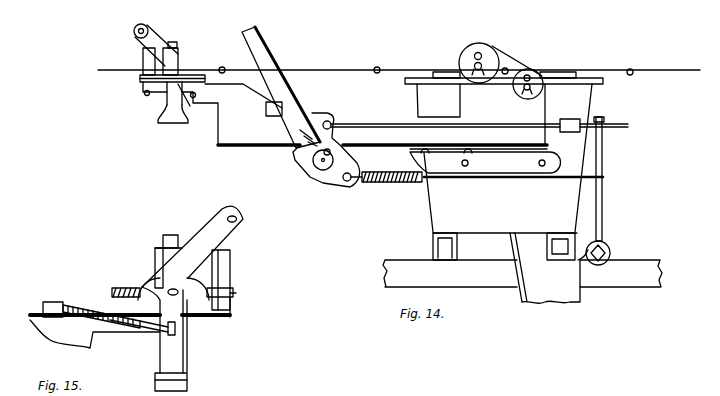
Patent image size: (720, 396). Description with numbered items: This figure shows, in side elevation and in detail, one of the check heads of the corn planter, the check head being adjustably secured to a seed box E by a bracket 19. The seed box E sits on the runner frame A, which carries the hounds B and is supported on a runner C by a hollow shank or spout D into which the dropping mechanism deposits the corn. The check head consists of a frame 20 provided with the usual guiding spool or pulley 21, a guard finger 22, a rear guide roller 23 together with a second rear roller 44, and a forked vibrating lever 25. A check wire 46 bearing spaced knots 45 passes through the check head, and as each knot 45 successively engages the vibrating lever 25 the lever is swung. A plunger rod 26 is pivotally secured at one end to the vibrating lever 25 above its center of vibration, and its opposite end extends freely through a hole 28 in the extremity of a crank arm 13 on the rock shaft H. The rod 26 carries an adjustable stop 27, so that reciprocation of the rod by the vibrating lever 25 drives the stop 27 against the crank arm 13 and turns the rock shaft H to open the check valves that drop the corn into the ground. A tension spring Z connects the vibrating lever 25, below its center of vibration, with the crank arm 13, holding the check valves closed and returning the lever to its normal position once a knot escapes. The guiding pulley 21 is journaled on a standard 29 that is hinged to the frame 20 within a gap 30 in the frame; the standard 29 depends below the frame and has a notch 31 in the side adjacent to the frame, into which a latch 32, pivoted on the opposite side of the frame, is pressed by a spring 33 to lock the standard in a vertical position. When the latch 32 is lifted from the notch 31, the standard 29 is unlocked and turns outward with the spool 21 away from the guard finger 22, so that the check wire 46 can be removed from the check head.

In FIG. 14, the crank arm 13 is at (597, 198).
In FIG. 14, the bracket 19 is at (485, 161).
In FIG. 14, the frame 20 is at (382, 139).
In FIG. 15, the frame 20 is at (130, 318).
In FIG. 14, the guiding spool or pulley 21 is at (178, 63).
In FIG. 15, the guiding spool or pulley 21 is at (155, 263).
In FIG. 14, the guard finger 22 is at (143, 54).
In FIG. 15, the guard finger 22 is at (230, 263).
In FIG. 14, the rear guide roller 23 is at (479, 63).
In FIG. 14, the forked vibrating lever 25 is at (288, 100).
In FIG. 14, the plunger rod 26 is at (511, 124).
In FIG. 14, the adjustable stop 27 is at (570, 126).
In FIG. 14, the hole 28 is at (604, 128).
In FIG. 14, the standard 29 is at (163, 108).
In FIG. 15, the standard 29 is at (185, 347).
In FIG. 14, the gap 30 is at (193, 102).
In FIG. 15, the notch 31 is at (188, 379).
In FIG. 14, the latch 32 is at (149, 31).
In FIG. 15, the latch 32 is at (192, 289).
In FIG. 15, the spring 33 is at (112, 326).
In FIG. 14, the small pulley 44 is at (517, 72).
In FIG. 14, the knot 45 is at (378, 67).
In FIG. 14, the check wire 46 is at (326, 69).
In FIG. 14, the runner frame A is at (433, 247).
In FIG. 14, the hounds B is at (450, 273).
In FIG. 14, the runner C is at (351, 94).
In FIG. 14, the hollow shank or spout D is at (545, 268).
In FIG. 14, the seed box E is at (504, 108).
In FIG. 14, the rock shaft H is at (608, 251).
In FIG. 14, the tension spring Z is at (382, 186).